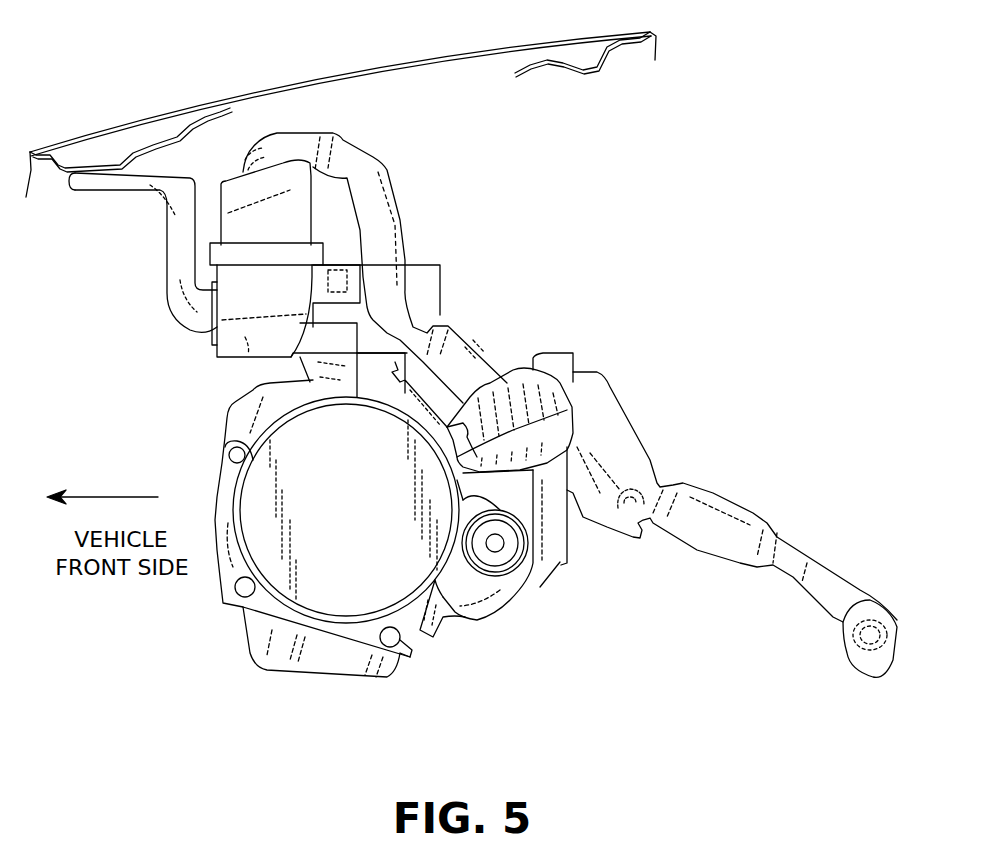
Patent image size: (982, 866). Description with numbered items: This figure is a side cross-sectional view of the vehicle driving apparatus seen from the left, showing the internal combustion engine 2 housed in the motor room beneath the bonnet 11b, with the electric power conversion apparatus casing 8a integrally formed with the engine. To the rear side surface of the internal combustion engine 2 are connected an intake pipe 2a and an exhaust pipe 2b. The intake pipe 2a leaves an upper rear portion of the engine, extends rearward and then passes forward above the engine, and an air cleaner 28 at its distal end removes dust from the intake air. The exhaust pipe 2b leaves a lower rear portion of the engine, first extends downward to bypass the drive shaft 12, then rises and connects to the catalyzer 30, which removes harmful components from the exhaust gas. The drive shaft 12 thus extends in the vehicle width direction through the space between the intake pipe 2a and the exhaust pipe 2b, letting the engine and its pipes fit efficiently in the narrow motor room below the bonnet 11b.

The internal combustion engine 2 is at (337, 590).
The intake pipe 2a is at (373, 157).
The exhaust pipe 2b is at (547, 600).
The electric power conversion apparatus casing 8a is at (420, 263).
The bonnet 11b is at (233, 92).
The drive shaft 12 is at (495, 553).
The air cleaner 28 is at (233, 310).
The catalyzer 30 is at (633, 427).